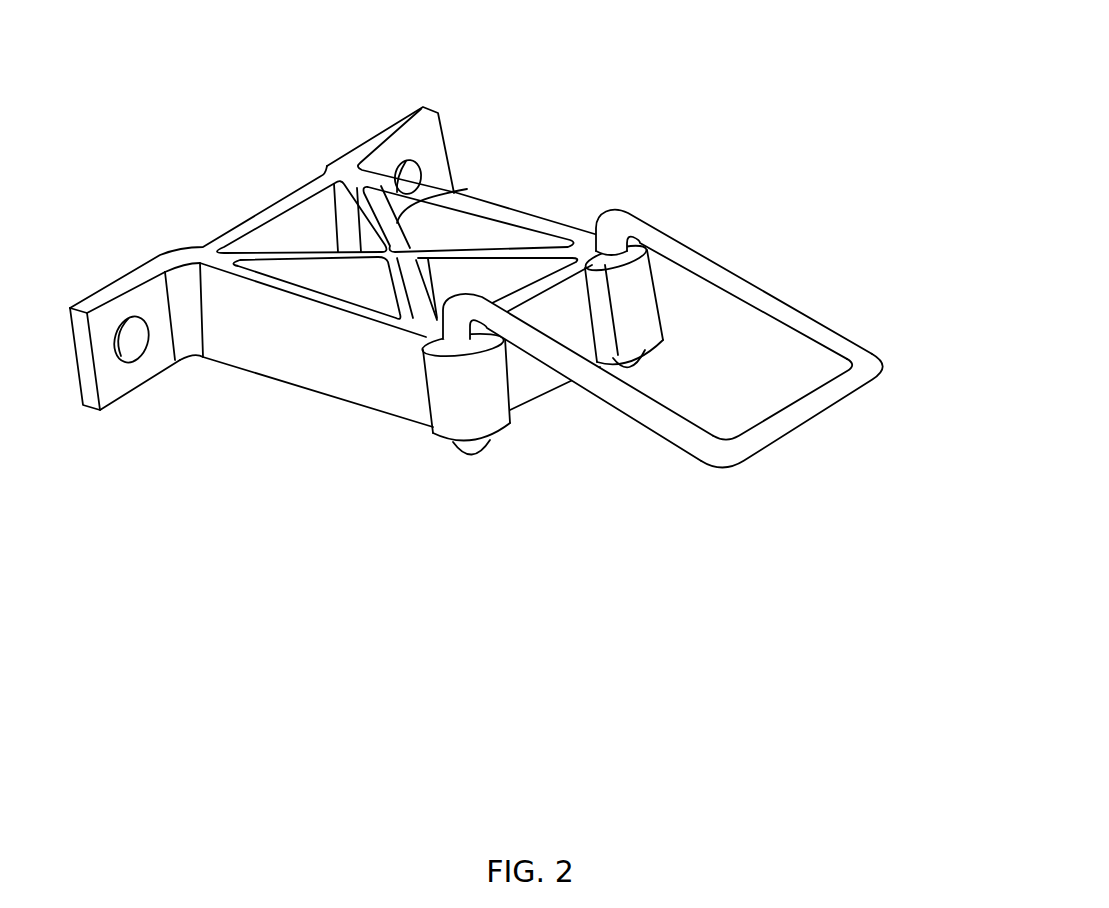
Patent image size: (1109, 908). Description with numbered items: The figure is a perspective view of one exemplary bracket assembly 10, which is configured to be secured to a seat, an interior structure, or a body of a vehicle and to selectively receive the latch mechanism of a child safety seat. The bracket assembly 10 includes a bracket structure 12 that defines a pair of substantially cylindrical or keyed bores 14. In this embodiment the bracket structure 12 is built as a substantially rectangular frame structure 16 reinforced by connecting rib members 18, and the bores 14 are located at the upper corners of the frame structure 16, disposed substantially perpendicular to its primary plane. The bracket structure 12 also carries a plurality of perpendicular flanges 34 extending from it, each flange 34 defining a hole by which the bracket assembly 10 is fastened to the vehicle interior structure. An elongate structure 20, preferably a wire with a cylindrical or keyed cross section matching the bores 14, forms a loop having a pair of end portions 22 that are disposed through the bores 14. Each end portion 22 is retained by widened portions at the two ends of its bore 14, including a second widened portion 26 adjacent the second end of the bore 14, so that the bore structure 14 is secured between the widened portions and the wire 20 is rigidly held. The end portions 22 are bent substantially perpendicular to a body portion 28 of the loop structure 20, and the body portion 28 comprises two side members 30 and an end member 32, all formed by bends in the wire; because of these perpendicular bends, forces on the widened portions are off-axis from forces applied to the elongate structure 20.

The bracket assembly 10 is at (606, 66).
The bracket structure 12 is at (513, 207).
The bore 14 is at (448, 395).
The substantially rectangular frame structure 16 is at (317, 365).
The connecting rib member 18 is at (433, 202).
The elongate structure 20 is at (770, 256).
The end portion 22 is at (445, 462).
The second widened portion 26 is at (423, 348).
The body portion 28 is at (902, 369).
The side member 30 is at (833, 300).
The end member 32 is at (820, 435).
The perpendicular flange 34 is at (386, 130).